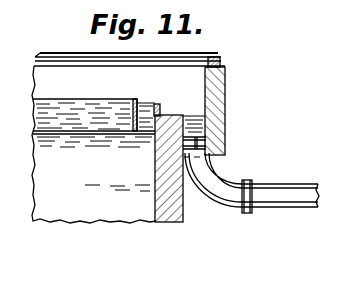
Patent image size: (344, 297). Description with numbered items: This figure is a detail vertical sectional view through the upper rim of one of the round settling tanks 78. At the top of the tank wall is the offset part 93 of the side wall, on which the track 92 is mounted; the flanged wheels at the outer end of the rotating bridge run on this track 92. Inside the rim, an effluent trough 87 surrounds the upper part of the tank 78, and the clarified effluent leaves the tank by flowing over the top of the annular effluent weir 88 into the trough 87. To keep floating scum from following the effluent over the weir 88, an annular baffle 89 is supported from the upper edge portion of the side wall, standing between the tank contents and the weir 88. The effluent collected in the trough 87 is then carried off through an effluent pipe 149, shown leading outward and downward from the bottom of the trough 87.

The round settling tank 78 is at (94, 144).
The effluent trough 87 is at (196, 131).
The annular effluent weir 88 is at (157, 103).
The annular baffle 89 is at (137, 99).
The track 92 is at (215, 59).
The offset part of the side wall 93 is at (225, 97).
The effluent pipe 149 is at (289, 191).